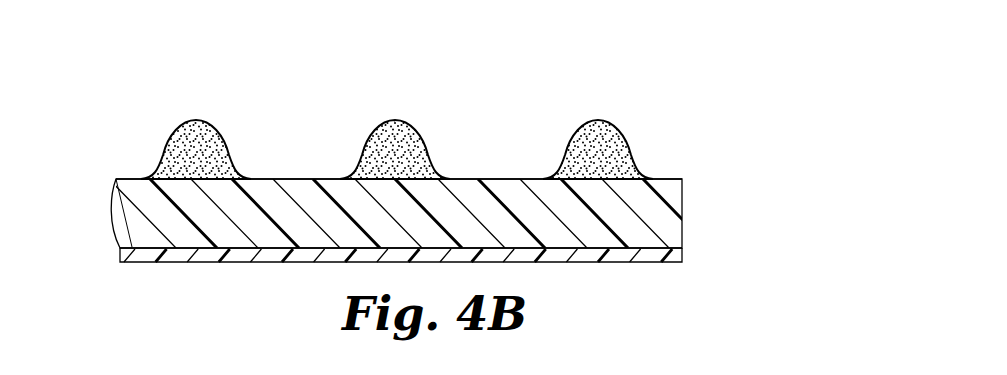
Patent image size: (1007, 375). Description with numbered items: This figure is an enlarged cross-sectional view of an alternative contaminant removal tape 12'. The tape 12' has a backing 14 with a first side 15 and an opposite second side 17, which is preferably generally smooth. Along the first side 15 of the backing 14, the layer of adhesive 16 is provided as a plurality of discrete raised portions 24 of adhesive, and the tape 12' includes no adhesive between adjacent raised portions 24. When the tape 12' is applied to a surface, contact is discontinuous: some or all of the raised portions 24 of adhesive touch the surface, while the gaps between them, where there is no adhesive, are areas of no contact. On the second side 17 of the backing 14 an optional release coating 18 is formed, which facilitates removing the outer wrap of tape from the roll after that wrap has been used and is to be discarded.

The contaminant removal tape 12' is at (401, 192).
The backing 14 is at (125, 207).
The first side 15 is at (308, 178).
The layer of adhesive 16 is at (152, 130).
The second side 17 is at (278, 252).
The release coating 18 is at (187, 252).
The raised portions of adhesive 24 is at (364, 122).